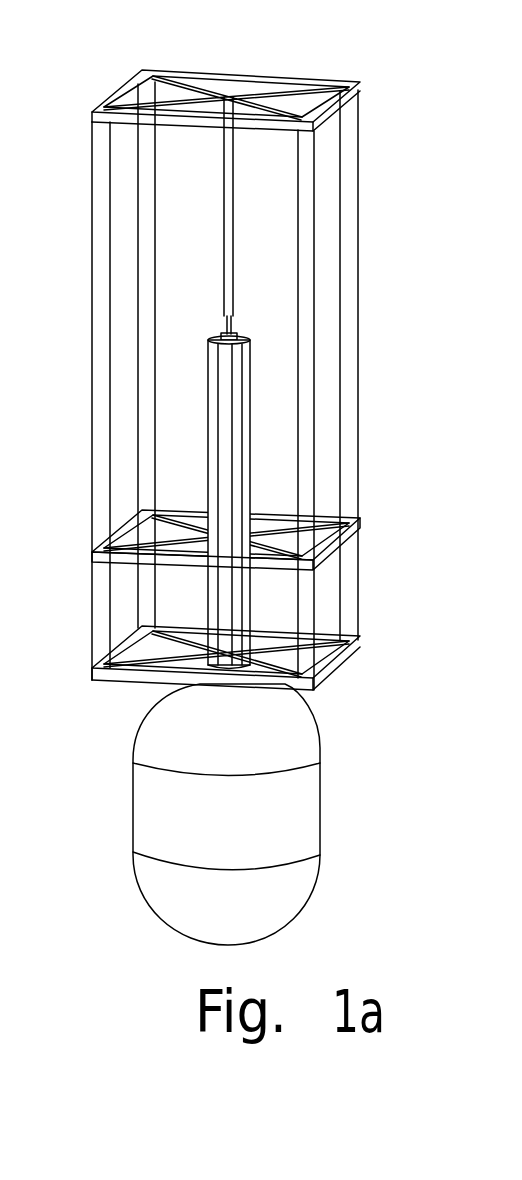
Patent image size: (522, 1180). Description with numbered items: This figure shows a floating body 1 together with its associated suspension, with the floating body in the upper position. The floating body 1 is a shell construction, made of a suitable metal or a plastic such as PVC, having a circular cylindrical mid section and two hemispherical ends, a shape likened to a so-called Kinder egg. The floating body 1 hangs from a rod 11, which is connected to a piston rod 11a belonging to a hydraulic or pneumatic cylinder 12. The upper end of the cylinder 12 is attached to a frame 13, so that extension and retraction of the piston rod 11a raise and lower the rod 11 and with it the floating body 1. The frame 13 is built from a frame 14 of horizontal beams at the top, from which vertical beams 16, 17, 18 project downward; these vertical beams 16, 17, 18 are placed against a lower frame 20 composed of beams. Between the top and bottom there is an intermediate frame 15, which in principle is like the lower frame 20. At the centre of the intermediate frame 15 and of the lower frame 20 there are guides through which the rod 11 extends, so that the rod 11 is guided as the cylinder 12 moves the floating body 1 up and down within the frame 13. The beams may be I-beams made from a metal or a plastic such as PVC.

The floating body 1 is at (300, 806).
The rod 11 is at (240, 430).
The piston rod 11a is at (232, 322).
The hydraulic or pneumatic cylinder 12 is at (226, 239).
The frame 13 is at (362, 80).
The frame of horizontal beams 14 is at (302, 73).
The intermediate frame 15 is at (340, 542).
The vertical beam 16 is at (355, 320).
The vertical beam 17 is at (95, 298).
The vertical beam 18 is at (146, 236).
The lower frame 20 is at (343, 678).